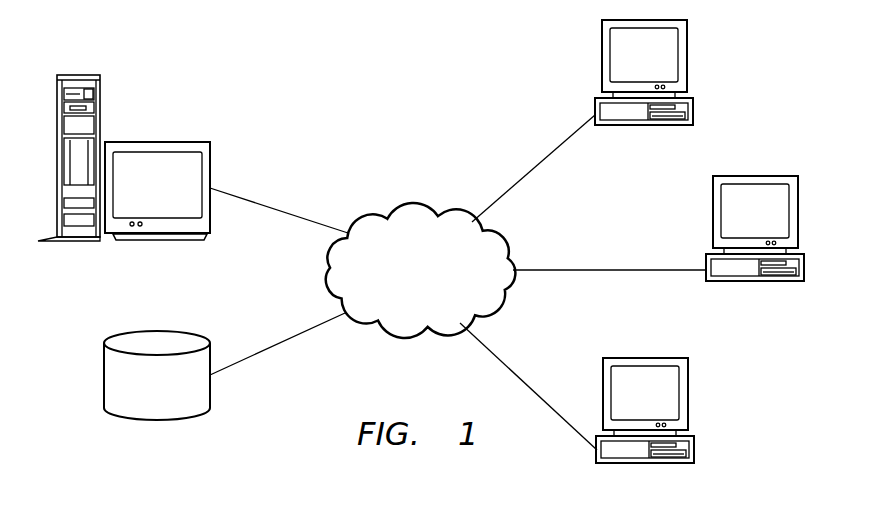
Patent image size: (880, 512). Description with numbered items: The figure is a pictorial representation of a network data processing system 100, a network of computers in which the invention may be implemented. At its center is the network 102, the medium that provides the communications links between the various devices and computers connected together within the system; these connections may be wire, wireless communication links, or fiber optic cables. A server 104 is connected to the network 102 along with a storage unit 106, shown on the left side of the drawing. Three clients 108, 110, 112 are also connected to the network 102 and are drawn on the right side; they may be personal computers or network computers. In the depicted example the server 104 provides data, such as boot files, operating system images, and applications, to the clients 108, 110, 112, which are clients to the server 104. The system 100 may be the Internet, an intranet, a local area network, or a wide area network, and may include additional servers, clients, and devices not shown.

The network data processing system 100 is at (294, 85).
The network 102 is at (440, 297).
The server 104 is at (98, 102).
The storage unit 106 is at (102, 377).
The client 108 is at (687, 63).
The client 110 is at (800, 218).
The client 112 is at (690, 400).